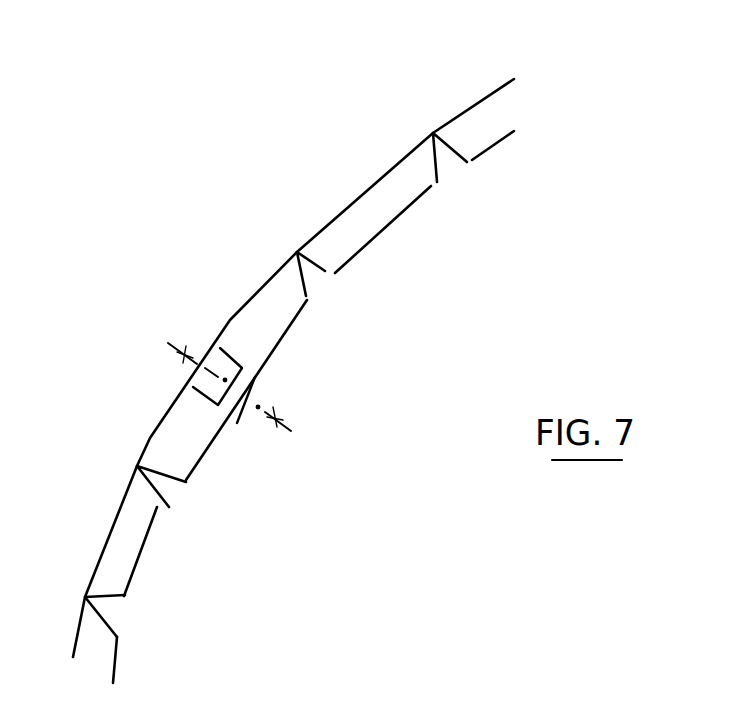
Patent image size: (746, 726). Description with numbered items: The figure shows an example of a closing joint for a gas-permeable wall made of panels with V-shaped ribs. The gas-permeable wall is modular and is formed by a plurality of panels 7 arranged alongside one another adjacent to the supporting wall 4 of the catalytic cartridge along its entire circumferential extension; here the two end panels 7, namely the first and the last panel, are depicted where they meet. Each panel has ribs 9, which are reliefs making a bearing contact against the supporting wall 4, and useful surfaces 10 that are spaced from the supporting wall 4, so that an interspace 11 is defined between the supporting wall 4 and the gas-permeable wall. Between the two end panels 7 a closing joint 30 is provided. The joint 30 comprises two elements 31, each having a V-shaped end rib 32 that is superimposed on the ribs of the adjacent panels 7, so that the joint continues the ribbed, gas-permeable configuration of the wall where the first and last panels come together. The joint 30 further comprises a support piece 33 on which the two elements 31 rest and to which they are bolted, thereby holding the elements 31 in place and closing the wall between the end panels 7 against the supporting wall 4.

The supporting wall 4 is at (388, 168).
The panels 7 is at (415, 197).
The ribs 9 is at (452, 143).
The useful surfaces 10 is at (375, 240).
The interspace 11 is at (352, 226).
The closing joint 30 is at (302, 472).
The elements 31 is at (299, 337).
The V-shaped end rib 32 is at (335, 292).
The support piece 33 is at (221, 352).